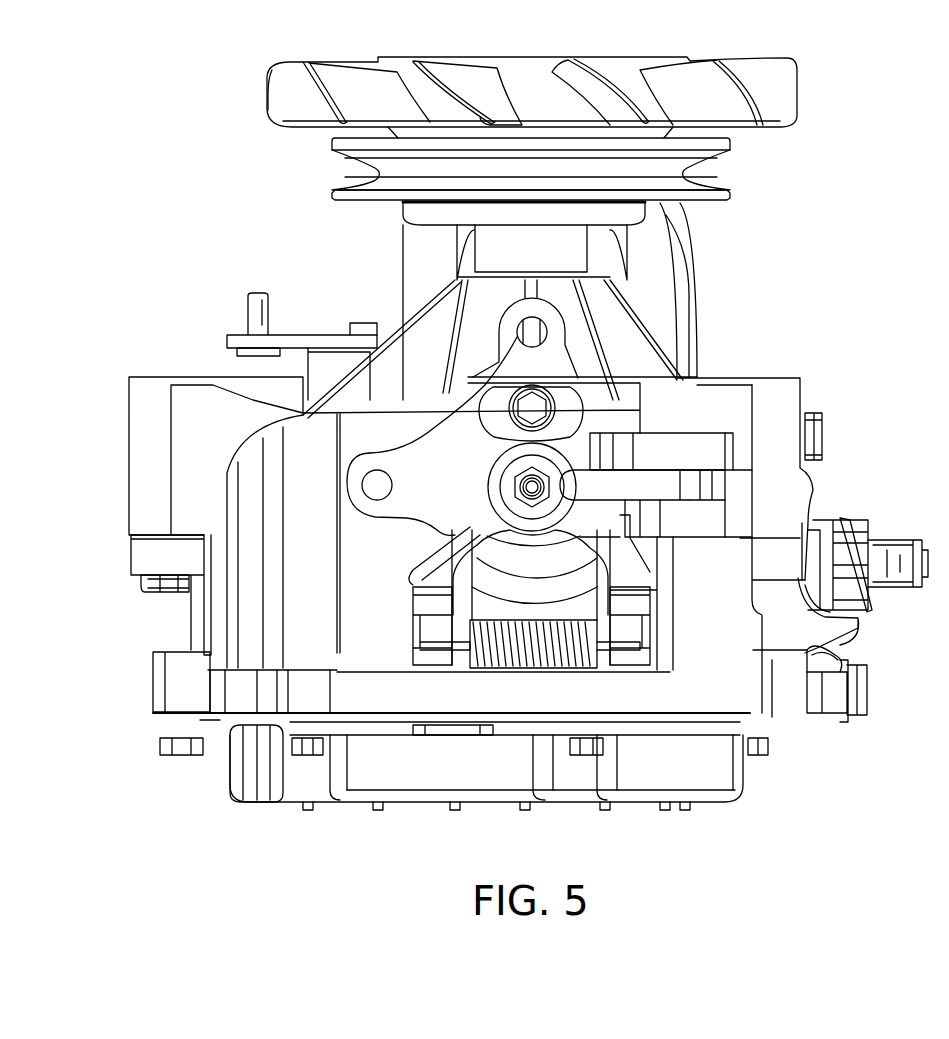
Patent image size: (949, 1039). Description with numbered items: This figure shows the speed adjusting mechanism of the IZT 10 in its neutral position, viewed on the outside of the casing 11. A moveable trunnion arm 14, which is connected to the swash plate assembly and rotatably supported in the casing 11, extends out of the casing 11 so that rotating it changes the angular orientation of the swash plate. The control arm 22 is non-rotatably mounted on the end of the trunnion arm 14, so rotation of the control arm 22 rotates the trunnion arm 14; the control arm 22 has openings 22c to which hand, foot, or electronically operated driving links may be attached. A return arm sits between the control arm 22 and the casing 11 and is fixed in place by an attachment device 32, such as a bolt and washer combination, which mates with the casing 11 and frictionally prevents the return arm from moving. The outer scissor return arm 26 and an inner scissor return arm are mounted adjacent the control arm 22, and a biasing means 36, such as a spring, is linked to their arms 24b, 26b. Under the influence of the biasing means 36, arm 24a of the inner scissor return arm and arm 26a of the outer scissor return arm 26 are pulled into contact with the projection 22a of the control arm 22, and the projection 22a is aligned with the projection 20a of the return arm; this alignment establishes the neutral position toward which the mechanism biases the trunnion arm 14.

The IZT 10 is at (532, 168).
The casing 11 is at (777, 377).
The trunnion arm 14 is at (468, 545).
The projection of the return arm 20a is at (715, 491).
The control arm 22 is at (429, 411).
The projection of the control arm 22a is at (693, 477).
The openings 22c is at (363, 393).
The arm of the inner scissor return arm 24a is at (685, 447).
The arm of the inner scissor return arm 24b is at (630, 612).
The outer scissor return arm 26 is at (475, 490).
The arm of the outer scissor return arm 26a is at (700, 520).
The arm of the outer scissor return arm 26b is at (427, 601).
The attachment device 32 is at (537, 405).
The biasing means 36 is at (520, 670).